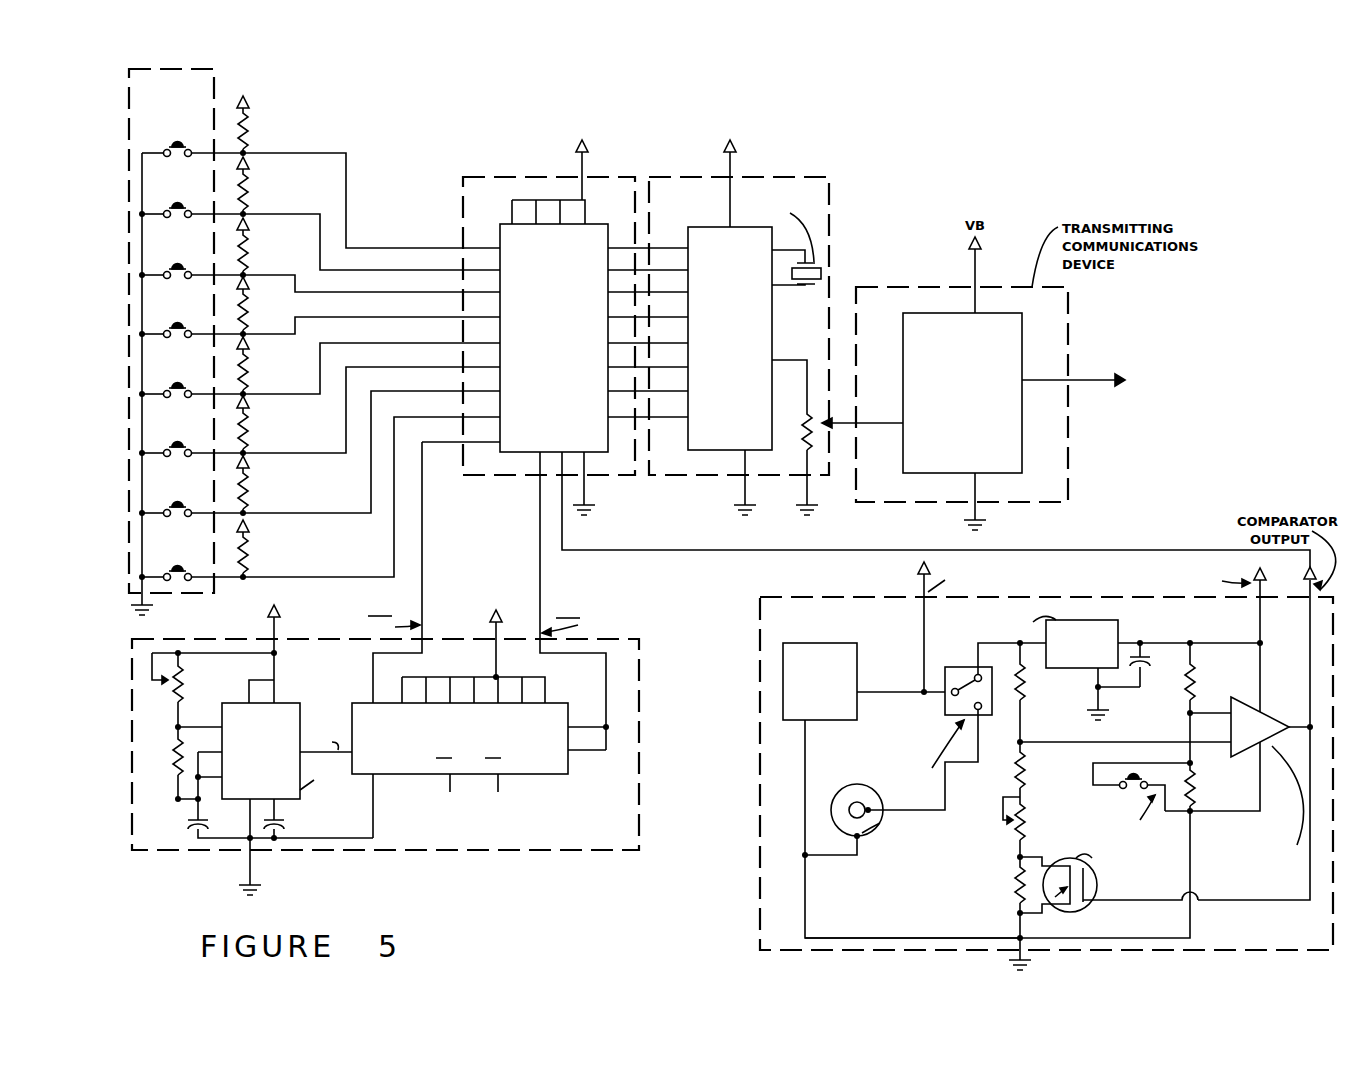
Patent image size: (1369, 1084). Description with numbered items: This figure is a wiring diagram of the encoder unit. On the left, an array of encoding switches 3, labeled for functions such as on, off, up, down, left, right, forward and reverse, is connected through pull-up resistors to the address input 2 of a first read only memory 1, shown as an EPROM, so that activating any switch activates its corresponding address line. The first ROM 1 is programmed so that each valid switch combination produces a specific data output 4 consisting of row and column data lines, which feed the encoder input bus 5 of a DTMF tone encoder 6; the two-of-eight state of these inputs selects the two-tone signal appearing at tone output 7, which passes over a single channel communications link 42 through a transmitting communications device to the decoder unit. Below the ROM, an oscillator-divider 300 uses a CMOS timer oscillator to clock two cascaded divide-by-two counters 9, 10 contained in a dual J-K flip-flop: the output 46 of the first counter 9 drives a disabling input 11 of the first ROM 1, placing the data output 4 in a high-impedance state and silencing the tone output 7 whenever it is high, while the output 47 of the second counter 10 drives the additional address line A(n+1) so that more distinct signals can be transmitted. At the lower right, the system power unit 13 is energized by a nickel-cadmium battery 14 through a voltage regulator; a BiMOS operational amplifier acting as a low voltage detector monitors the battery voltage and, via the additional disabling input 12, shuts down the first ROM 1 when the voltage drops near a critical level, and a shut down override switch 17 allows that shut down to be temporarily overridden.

The first read only memory 1 is at (550, 175).
The address input 2 is at (455, 230).
The encoding switches 3 is at (180, 69).
The data output 4 is at (621, 232).
The encoder input bus 5 is at (662, 235).
The DTMF tone encoder 6 is at (787, 176).
The tone output 7 is at (838, 421).
The first counter 9 is at (481, 715).
The second counter 10 is at (545, 776).
The disabling input 11 is at (539, 470).
The additional disabling input 12 is at (559, 470).
The system power unit 13 is at (860, 596).
The battery 14 is at (822, 650).
The shut down override switch 17 is at (1093, 762).
The single channel communications link 42 is at (1085, 383).
The output of first counter 46 is at (542, 606).
The output of second counter 47 is at (423, 606).
The oscillator-divider 300 is at (385, 744).